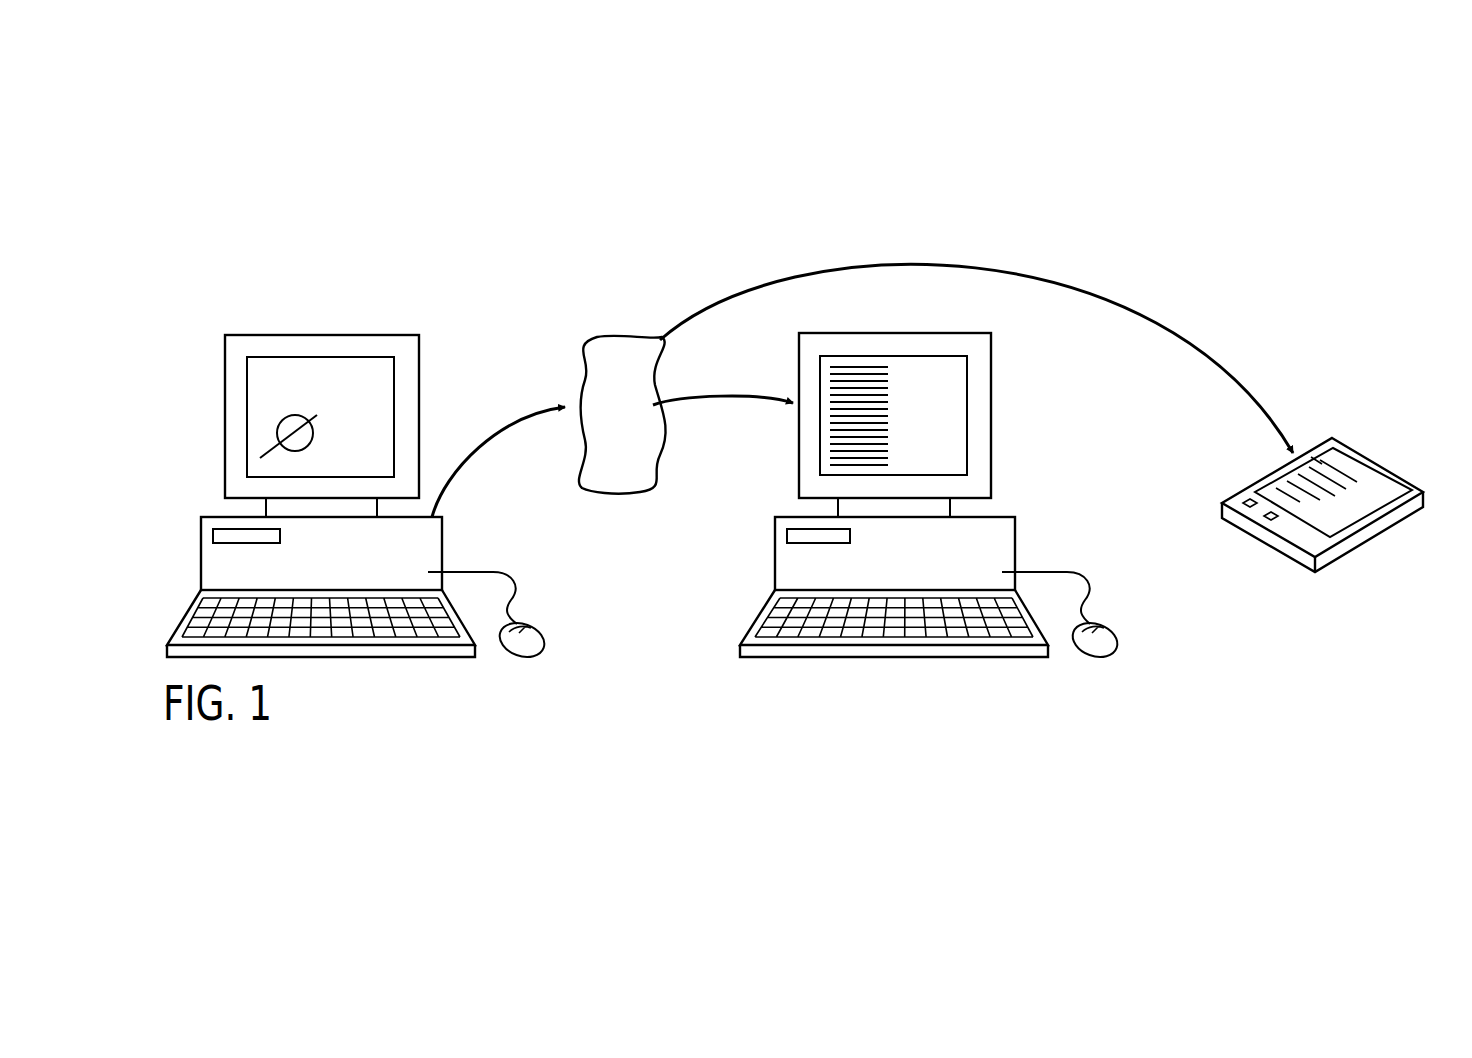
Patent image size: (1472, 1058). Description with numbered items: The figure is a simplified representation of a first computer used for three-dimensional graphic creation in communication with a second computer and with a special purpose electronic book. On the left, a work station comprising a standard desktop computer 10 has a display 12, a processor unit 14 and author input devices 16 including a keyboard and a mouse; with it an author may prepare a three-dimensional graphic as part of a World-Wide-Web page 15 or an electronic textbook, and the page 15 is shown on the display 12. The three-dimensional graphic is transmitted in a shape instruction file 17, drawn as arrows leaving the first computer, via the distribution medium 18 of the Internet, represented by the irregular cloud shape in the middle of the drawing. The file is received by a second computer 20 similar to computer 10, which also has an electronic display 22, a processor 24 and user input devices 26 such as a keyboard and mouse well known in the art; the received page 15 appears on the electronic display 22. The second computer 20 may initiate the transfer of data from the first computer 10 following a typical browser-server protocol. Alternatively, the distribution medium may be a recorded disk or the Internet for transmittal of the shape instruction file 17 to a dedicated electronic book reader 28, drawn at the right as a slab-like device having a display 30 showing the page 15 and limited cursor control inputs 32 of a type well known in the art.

The desktop computer 10 is at (362, 311).
The display 12 is at (225, 336).
The processor unit 14 is at (201, 545).
The World-Wide-Web page 15 is at (380, 402).
The author input devices 16 is at (422, 657).
The shape instruction file 17 is at (512, 415).
The distribution medium 18 is at (597, 337).
The second computer 20 is at (918, 318).
The electronic display 22 is at (970, 388).
The processor 24 is at (1015, 535).
The user input devices 26 is at (1022, 657).
The dedicated electronic book reader 28 is at (1375, 528).
The display 30 is at (1393, 475).
The cursor control inputs 32 is at (1268, 522).